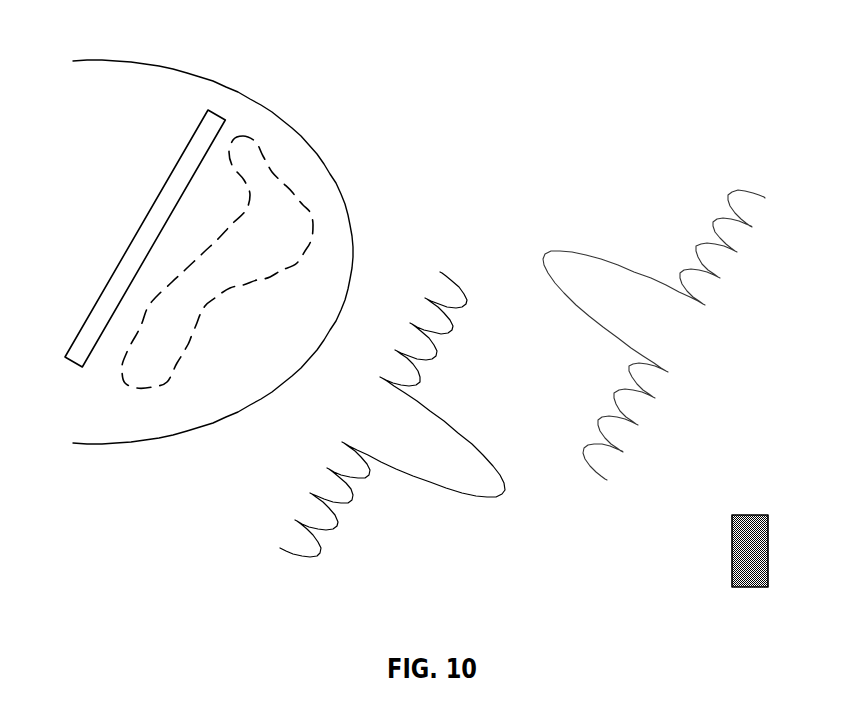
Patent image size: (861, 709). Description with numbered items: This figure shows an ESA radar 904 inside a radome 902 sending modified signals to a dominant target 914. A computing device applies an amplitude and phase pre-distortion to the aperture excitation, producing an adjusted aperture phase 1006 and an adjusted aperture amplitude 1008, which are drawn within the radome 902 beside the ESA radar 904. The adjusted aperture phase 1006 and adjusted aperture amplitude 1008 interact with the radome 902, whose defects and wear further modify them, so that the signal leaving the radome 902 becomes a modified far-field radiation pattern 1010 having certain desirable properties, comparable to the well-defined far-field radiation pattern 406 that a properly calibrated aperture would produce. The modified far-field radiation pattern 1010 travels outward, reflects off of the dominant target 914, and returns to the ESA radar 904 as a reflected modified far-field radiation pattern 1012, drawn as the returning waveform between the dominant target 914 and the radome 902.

The radome 902 is at (194, 80).
The ESA radar 904 is at (172, 177).
The adjusted aperture phase 1006 is at (113, 380).
The adjusted aperture amplitude 1008 is at (297, 195).
The modified far-field radiation pattern 1010 is at (430, 540).
The reflected modified far-field radiation pattern 1012 is at (640, 205).
The far-field radiation pattern 406 is at (569, 357).
The dominant target 914 is at (752, 522).